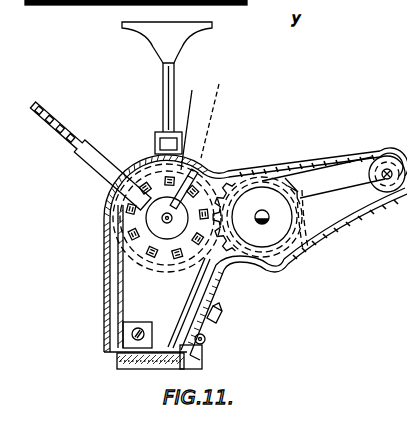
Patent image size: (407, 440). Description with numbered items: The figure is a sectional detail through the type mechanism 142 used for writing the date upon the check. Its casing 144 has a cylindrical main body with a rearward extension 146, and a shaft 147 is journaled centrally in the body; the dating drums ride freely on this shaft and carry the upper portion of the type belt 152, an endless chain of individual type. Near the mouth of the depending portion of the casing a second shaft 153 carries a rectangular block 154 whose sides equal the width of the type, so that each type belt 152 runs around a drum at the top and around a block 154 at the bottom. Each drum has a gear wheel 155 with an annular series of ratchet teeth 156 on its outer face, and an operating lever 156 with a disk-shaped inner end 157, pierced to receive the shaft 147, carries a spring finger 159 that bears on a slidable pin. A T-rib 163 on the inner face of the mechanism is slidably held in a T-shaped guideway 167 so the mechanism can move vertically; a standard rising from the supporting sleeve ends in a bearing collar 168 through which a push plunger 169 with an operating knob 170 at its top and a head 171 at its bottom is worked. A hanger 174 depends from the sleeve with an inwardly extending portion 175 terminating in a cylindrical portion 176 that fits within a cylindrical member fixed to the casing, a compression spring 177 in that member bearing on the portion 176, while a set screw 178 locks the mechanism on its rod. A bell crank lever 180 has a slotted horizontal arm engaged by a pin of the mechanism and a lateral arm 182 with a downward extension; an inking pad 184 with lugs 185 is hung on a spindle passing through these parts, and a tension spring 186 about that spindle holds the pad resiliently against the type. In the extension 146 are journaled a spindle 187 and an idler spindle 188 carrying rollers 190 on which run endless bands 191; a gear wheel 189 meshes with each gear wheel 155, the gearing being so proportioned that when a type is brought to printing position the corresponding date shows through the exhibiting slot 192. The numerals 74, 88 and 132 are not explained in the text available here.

The frame member 74 is at (266, 0).
The member 88 is at (399, 22).
The bar 132 is at (116, 3).
The type mechanism 142 is at (224, 168).
The casing 144 is at (105, 196).
The rearward extension 146 is at (298, 190).
The shaft 147 is at (236, 173).
The type belt 152 is at (118, 292).
The shaft 153 is at (133, 340).
The rectangular block 154 is at (143, 323).
The gear wheel 155 is at (124, 218).
The ratchet teeth 156 is at (88, 147).
The disk-shaped inner end 157 is at (243, 168).
The spring finger 159 is at (135, 160).
The T-rib 163 is at (396, 107).
The T-shaped guideway 167 is at (201, 118).
The bearing collar 168 is at (160, 134).
The push plunger 169 is at (165, 90).
The operating knob 170 is at (167, 42).
The head 171 is at (208, 121).
The hanger 174 is at (406, 261).
The inwardly extending portion 175 is at (402, 290).
The cylindrical portion 176 is at (387, 339).
The compression spring 177 is at (406, 306).
The set screw 178 is at (392, 72).
The bell crank lever 180 is at (392, 158).
The arm 182 is at (216, 311).
The inking pad 184 is at (140, 363).
The lug 185 is at (215, 353).
The tension spring 186 is at (206, 338).
The spindle 187 is at (268, 214).
The idler spindle 188 is at (372, 208).
The gear wheel 189 is at (330, 150).
The roller 190 is at (384, 190).
The endless band 191 is at (322, 243).
The exhibiting slot 192 is at (348, 141).